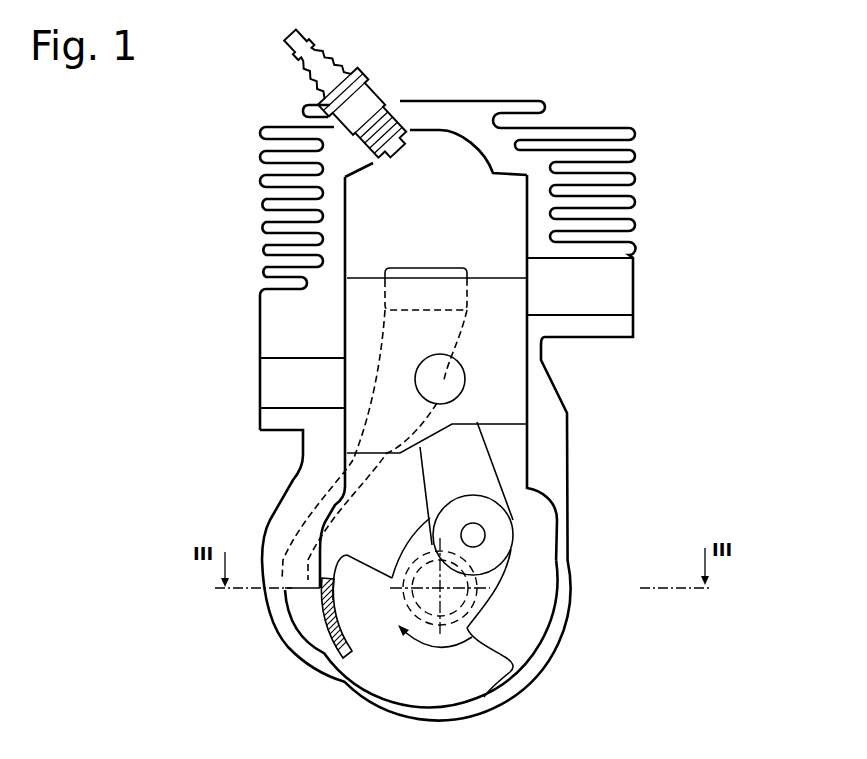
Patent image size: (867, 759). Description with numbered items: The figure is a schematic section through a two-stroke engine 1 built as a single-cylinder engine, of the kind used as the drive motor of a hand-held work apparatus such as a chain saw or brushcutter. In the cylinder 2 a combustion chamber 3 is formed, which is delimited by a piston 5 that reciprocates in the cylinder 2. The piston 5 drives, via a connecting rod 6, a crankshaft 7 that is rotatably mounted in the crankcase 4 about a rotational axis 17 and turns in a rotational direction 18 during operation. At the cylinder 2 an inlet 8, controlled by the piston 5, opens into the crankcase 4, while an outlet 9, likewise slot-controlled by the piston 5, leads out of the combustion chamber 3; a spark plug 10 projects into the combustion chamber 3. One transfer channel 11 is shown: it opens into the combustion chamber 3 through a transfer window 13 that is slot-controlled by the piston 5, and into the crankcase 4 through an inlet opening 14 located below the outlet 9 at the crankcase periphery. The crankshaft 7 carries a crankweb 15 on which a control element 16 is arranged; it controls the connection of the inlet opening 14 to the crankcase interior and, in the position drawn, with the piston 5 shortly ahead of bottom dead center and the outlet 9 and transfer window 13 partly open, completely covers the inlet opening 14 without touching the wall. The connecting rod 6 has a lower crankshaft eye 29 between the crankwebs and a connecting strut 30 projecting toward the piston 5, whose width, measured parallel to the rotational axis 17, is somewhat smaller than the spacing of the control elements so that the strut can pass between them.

The two-stroke engine 1 is at (672, 104).
The cylinder 2 is at (332, 218).
The combustion chamber 3 is at (485, 220).
The crankcase 4 is at (565, 598).
The piston 5 is at (503, 375).
The connecting rod 6 is at (482, 467).
The crankshaft 7 is at (447, 595).
The inlet 8 is at (340, 385).
The outlet 9 is at (535, 287).
The spark plug 10 is at (398, 125).
The transfer channel 11 is at (393, 343).
The transfer window 13 is at (428, 268).
The inlet opening 14 is at (318, 613).
The crankweb 15 is at (387, 667).
The control element 16 is at (328, 638).
The rotational axis 17 is at (437, 585).
The rotational direction 18 is at (462, 642).
The lower crankshaft eye 29 is at (497, 537).
The connecting strut 30 is at (487, 482).